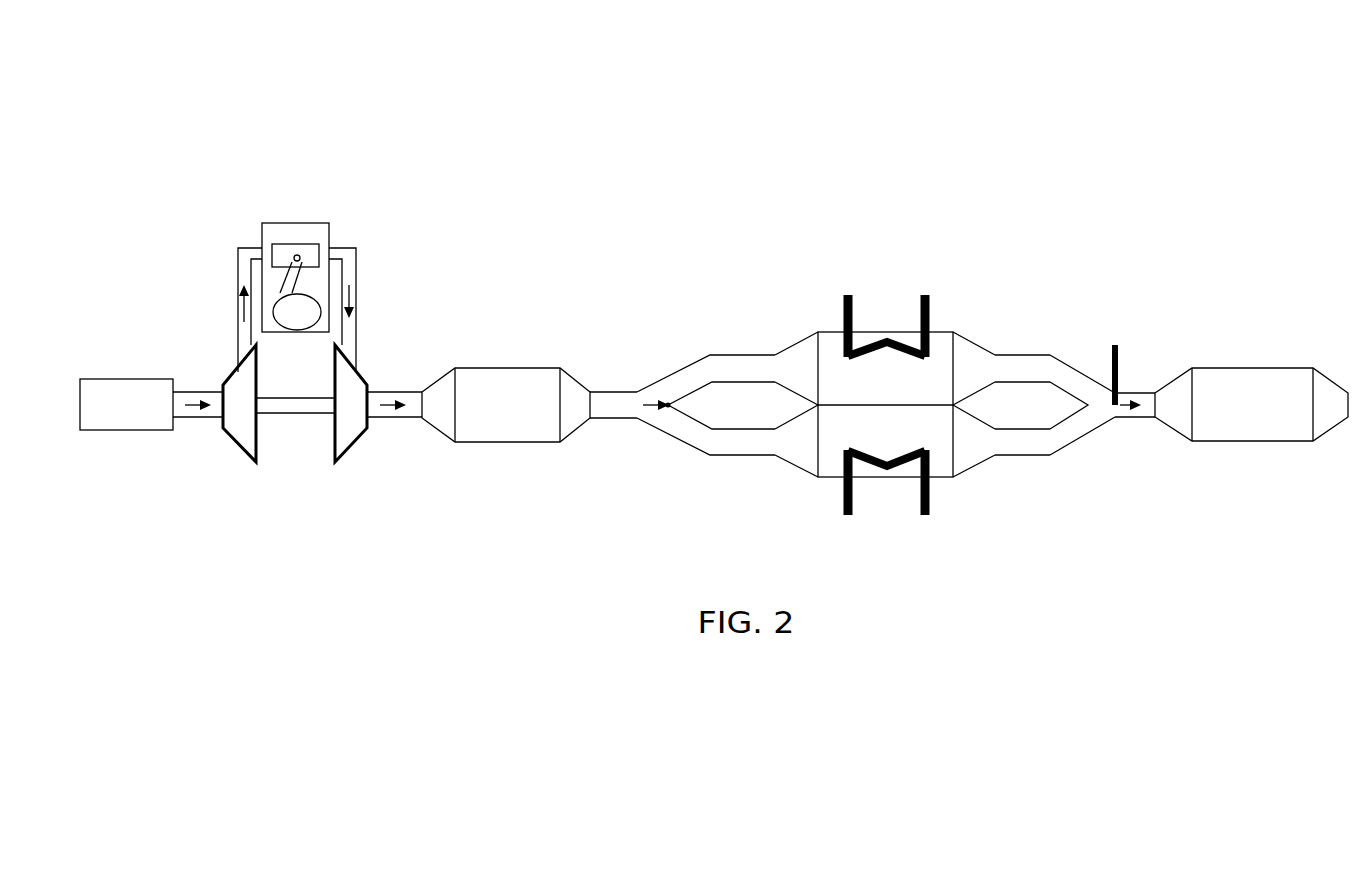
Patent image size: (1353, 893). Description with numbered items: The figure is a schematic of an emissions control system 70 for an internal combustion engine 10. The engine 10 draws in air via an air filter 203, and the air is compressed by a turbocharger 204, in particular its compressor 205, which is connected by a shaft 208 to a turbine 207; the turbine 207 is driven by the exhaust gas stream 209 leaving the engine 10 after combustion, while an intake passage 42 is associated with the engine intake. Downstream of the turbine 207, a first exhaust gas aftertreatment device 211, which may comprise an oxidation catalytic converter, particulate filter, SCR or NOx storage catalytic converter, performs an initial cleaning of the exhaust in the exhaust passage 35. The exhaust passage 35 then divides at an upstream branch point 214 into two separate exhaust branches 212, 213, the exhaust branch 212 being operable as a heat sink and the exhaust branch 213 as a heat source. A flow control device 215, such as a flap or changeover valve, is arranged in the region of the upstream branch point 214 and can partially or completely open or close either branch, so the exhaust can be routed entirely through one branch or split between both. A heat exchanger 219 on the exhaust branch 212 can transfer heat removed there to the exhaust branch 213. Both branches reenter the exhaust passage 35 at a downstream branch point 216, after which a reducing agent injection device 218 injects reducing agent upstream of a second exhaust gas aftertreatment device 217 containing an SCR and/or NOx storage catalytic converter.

The emissions control system 70 is at (588, 118).
The internal combustion engine 10 is at (278, 235).
The intake passage 42 is at (243, 267).
The exhaust gas stream 209 is at (348, 292).
The air filter 203 is at (147, 417).
The turbocharger 204 is at (301, 449).
The compressor 205 is at (238, 430).
The turbine 207 is at (357, 428).
The shaft 208 is at (303, 405).
The exhaust passage 35 is at (390, 397).
The first exhaust gas aftertreatment device 211 is at (500, 417).
The exhaust branch 212 is at (708, 368).
The exhaust branch 213 is at (708, 440).
The upstream branch point 214 is at (655, 390).
The flow control device 215 is at (666, 408).
The downstream branch point 216 is at (1102, 405).
The second exhaust gas aftertreatment device 217 is at (1233, 417).
The reducing agent injection device 218 is at (1120, 365).
The heat exchanger 219 is at (932, 348).